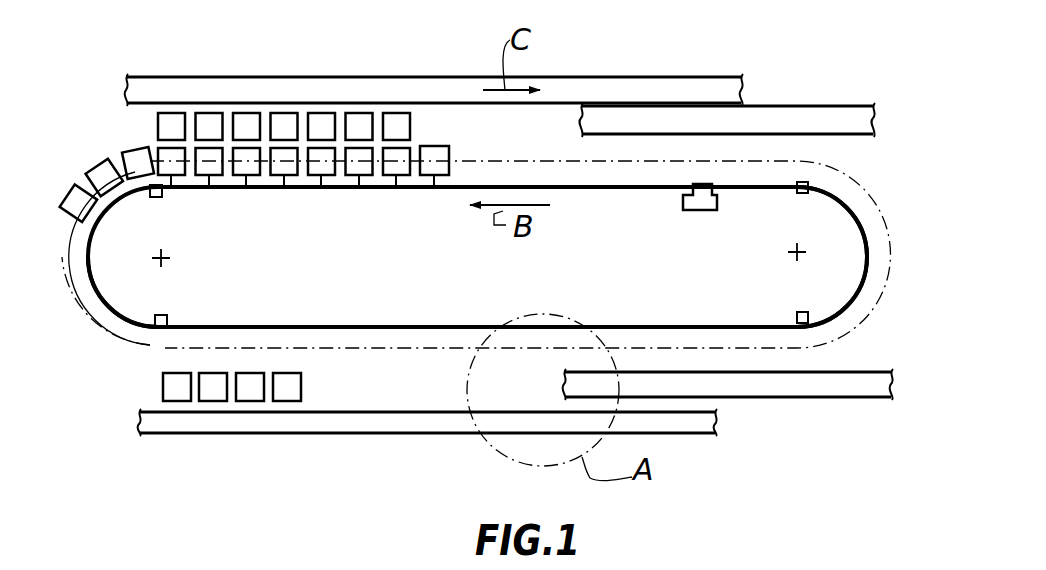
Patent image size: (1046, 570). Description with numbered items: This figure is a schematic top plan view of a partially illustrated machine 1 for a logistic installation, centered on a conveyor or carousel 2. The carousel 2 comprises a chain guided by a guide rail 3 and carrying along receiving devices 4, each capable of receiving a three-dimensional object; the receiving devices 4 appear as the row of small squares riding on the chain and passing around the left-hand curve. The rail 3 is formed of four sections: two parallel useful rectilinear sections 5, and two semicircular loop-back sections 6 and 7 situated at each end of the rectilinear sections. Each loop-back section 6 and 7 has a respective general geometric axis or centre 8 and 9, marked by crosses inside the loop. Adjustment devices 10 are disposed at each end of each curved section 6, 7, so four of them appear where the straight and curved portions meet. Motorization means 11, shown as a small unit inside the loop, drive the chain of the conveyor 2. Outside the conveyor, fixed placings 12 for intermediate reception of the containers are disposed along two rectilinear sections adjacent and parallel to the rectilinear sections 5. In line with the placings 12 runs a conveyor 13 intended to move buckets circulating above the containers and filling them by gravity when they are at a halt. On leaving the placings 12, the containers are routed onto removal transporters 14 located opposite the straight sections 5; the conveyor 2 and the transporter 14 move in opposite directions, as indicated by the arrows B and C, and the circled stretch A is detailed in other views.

The machine 1 is at (172, 458).
The conveyor or carousel 2 is at (70, 182).
The guide rail 3 is at (72, 262).
The receiving device 4 is at (112, 165).
The rectilinear section 5 is at (321, 195).
The semicircular loop-back section 6 is at (106, 325).
The semicircular loop-back section 7 is at (878, 273).
The loop-back geometric axis or centre 8 is at (174, 262).
The loop-back geometric axis or centre 9 is at (792, 252).
The adjustment device 10 is at (165, 190).
The motorization means 11 is at (700, 218).
The fixed placing 12 is at (424, 121).
The conveyor for buckets 13 is at (811, 128).
The removal transporter 14 is at (113, 82).